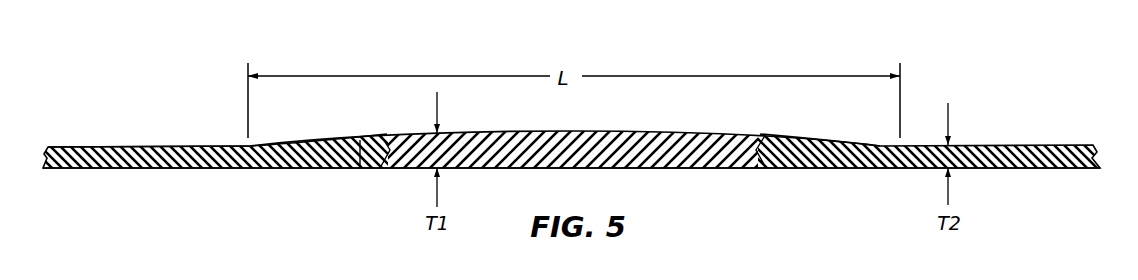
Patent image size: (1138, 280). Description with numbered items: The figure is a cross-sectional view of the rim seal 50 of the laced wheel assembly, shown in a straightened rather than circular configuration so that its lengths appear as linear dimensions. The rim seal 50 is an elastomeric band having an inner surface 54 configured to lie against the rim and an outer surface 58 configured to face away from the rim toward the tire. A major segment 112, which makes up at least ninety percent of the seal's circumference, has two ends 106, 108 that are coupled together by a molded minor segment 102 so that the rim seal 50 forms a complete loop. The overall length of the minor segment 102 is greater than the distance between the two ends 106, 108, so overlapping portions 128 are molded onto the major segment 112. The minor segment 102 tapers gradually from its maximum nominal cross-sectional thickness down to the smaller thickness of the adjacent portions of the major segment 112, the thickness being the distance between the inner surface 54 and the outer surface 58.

The rim seal 50 is at (988, 113).
The inner surface 54 is at (168, 170).
The outer surface 58 is at (182, 145).
The minor segment 102 is at (597, 142).
The end of major segment 106 is at (357, 168).
The end of major segment 108 is at (777, 167).
The major segment 112 is at (118, 147).
The overlapping portions 128 is at (358, 142).